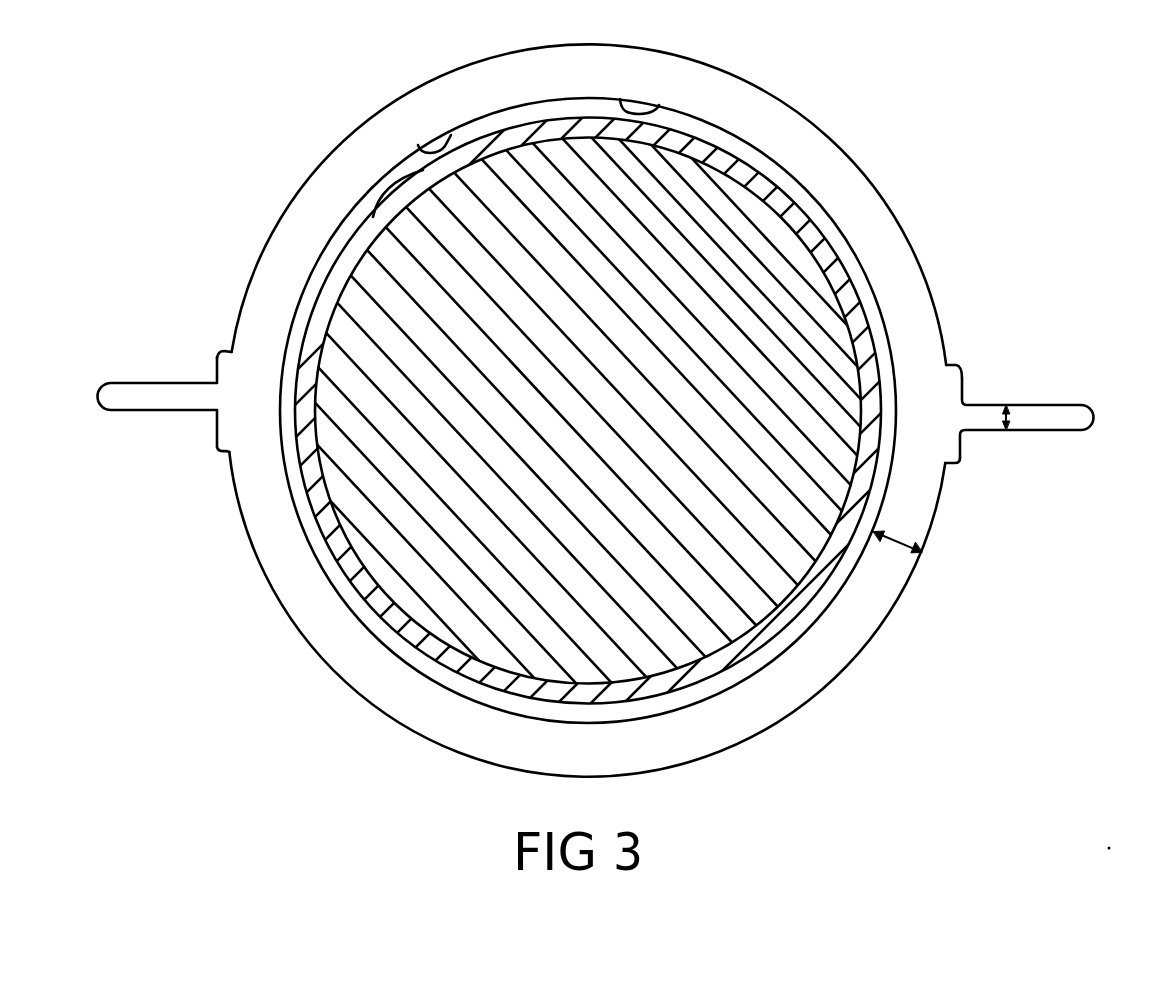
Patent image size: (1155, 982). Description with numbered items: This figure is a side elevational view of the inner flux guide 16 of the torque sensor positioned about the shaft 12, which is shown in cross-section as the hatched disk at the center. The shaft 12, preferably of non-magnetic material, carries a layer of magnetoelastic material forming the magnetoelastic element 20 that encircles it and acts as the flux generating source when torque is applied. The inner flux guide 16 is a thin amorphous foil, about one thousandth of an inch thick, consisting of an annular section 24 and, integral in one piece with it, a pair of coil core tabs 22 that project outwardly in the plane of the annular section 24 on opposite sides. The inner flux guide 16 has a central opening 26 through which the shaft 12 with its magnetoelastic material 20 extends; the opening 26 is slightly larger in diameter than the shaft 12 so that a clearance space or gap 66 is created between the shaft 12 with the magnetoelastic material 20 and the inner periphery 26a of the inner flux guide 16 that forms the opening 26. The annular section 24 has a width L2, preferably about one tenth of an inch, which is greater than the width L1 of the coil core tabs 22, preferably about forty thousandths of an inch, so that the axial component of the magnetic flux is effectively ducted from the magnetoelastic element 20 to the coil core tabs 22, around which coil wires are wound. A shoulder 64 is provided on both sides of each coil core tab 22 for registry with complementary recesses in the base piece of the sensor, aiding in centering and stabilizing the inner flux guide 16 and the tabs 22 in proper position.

The shaft 12 is at (755, 597).
The inner flux guide 16 is at (905, 122).
The magnetoelastic element 20 is at (728, 670).
The coil core tabs 22 is at (147, 382).
The annular section 24 is at (432, 718).
The central opening 26 is at (660, 107).
The inner periphery 26a is at (418, 146).
The shoulder 64 is at (218, 357).
The gap 66 is at (562, 710).
The width of the coil core tabs L1 is at (1012, 417).
The width of the annular section L2 is at (902, 539).